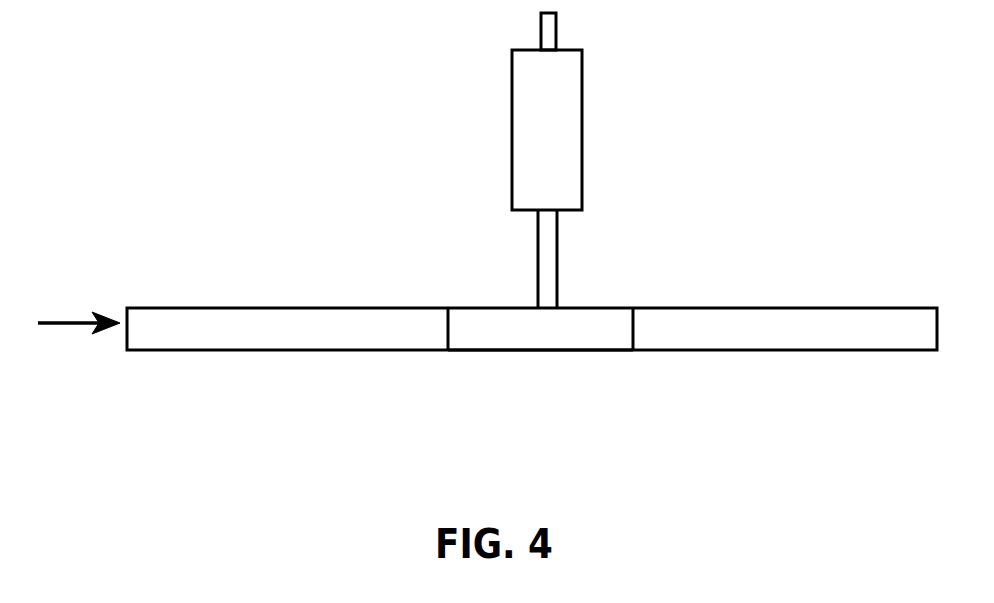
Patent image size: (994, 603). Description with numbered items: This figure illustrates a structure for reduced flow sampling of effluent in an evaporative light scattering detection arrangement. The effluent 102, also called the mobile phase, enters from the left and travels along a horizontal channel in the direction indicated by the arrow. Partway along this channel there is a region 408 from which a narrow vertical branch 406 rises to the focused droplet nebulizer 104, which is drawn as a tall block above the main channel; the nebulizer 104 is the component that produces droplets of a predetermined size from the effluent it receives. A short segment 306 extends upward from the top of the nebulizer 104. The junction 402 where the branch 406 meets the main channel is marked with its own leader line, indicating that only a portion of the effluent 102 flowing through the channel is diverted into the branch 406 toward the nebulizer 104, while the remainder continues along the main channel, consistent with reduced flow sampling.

The effluent 102 is at (76, 325).
The focused droplet nebulizer 104 is at (547, 148).
The port / connector 306 is at (556, 33).
The waveguide / channel 402 is at (548, 322).
The branch waveguide / stem 406 is at (552, 260).
The coupling region 408 is at (603, 335).